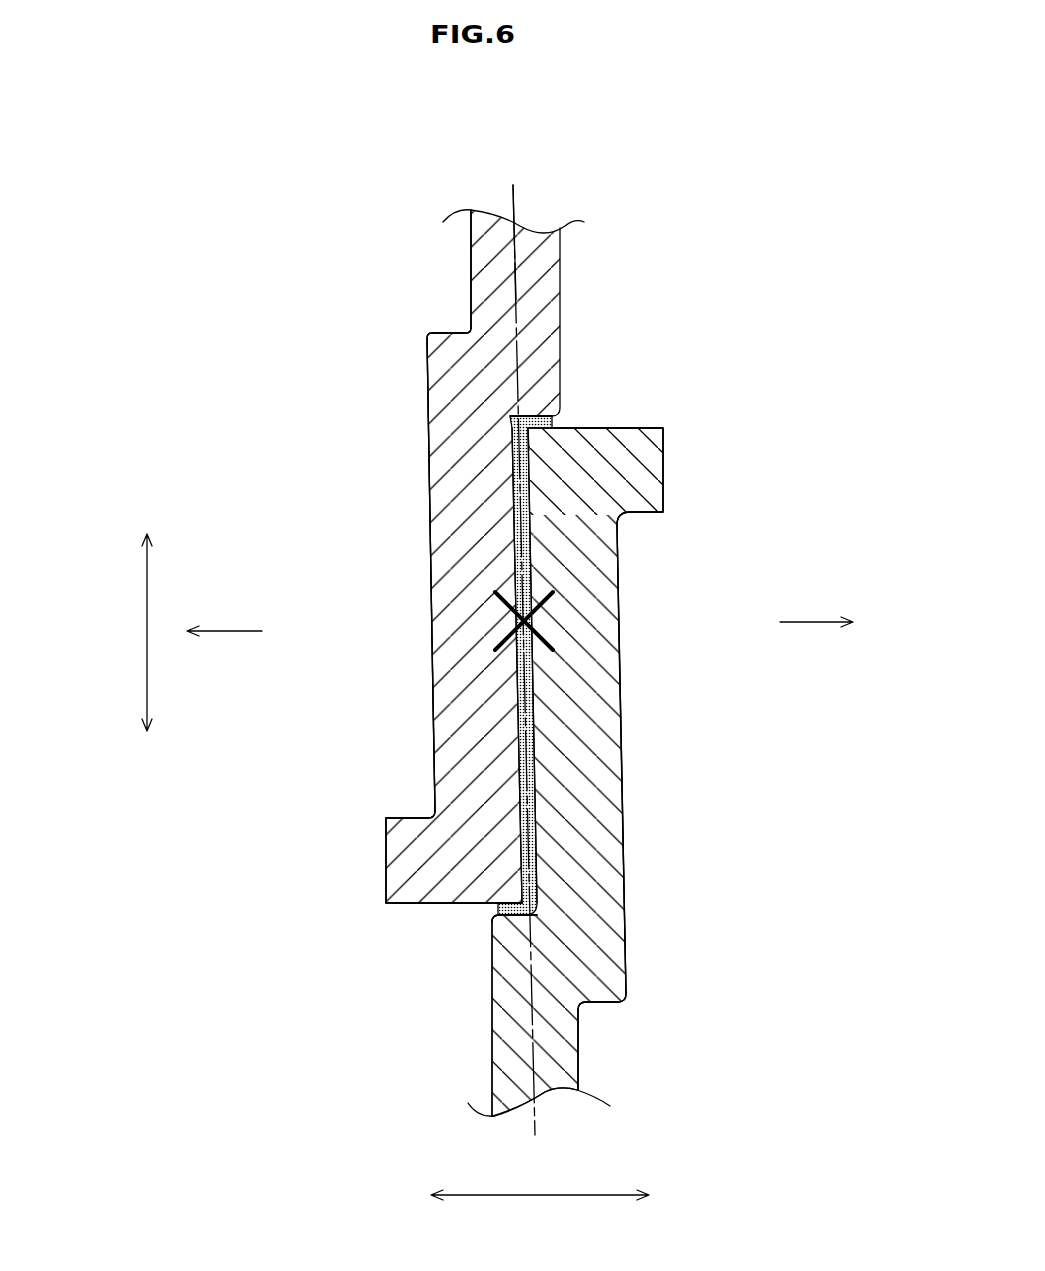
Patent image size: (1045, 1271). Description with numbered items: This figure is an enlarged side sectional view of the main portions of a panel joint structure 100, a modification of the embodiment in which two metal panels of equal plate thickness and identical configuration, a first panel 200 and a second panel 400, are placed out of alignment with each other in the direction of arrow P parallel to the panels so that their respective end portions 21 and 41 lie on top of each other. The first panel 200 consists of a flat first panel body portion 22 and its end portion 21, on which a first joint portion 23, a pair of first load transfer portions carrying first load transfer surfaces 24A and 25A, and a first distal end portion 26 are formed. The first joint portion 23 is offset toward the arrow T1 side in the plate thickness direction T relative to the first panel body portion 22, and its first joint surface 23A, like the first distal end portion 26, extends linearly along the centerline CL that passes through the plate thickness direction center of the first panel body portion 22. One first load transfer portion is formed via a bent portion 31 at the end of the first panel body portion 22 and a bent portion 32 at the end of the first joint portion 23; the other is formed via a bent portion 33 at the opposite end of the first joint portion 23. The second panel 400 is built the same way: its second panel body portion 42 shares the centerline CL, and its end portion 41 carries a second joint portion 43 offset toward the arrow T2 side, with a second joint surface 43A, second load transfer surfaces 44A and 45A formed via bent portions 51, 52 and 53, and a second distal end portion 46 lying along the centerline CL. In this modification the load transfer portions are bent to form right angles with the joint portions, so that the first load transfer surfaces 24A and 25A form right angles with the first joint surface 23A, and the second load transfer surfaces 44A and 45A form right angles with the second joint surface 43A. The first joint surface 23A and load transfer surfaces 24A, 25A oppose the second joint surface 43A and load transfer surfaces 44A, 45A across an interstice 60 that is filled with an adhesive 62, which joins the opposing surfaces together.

The assembly 100 is at (530, 166).
The first member 400 is at (459, 275).
The second member 200 is at (594, 1053).
The end portion 21 is at (707, 712).
The first panel body portion 22 is at (578, 1080).
The first joint portion 23 is at (622, 740).
The first joint surface 23A is at (520, 715).
The first load transfer surface 24A is at (510, 904).
The first load transfer surface 25A is at (522, 414).
The first distal end portion 26 is at (645, 428).
The bent portion 31 is at (580, 1010).
The bent portion 32 is at (580, 1004).
The bent portion 33 is at (618, 520).
The end portion 41 is at (356, 615).
The second panel body portion 42 is at (470, 240).
The second joint portion 43 is at (432, 673).
The second joint surface 43A is at (535, 674).
The second load transfer surface 44A is at (535, 438).
The second load transfer surface 45A is at (513, 918).
The second distal end portion 46 is at (400, 905).
The bent portion 51 is at (468, 332).
The bent portion 52 is at (427, 340).
The bent portion 53 is at (433, 812).
The bonding layer 60 is at (530, 552).
The adhesive 62 is at (542, 648).
The centerline CL is at (550, 1092).
The arrow P is at (145, 630).
The thickness direction T is at (540, 1196).
The arrow T1 side T1 is at (808, 622).
The arrow T2 side T2 is at (225, 630).